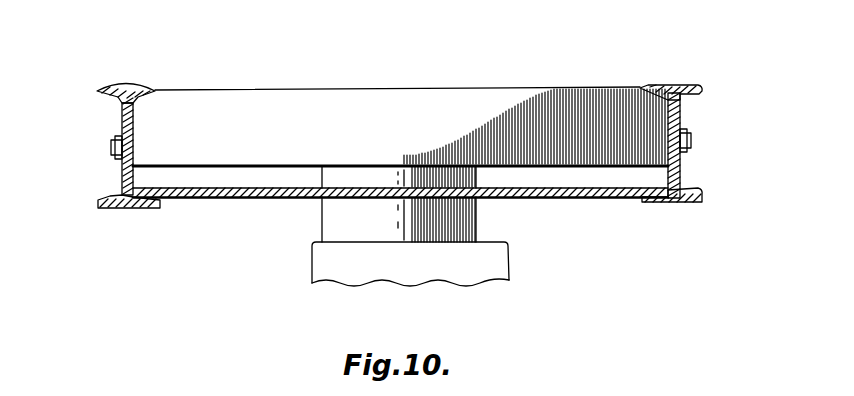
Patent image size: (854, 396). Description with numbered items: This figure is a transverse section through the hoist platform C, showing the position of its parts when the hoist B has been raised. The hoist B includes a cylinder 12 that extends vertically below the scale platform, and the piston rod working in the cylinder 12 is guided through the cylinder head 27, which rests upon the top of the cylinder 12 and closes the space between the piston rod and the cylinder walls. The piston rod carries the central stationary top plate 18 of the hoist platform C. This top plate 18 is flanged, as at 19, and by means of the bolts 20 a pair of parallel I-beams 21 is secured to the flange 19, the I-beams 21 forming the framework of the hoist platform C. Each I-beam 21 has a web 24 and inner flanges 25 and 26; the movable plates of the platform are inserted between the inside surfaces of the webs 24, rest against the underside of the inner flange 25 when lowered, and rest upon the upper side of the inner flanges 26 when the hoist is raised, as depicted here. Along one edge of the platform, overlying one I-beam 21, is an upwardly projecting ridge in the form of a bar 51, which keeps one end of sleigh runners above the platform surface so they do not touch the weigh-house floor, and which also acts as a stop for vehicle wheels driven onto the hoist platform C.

The bar 51 is at (128, 82).
The inner flange 25 is at (103, 96).
The I-beams 21 is at (122, 104).
The bolts 20 is at (111, 148).
The webs 24 is at (135, 164).
The inner flanges 26 is at (112, 197).
The flange 19 is at (250, 155).
The hoist B is at (338, 220).
The cylinder 12 is at (478, 220).
The cylinder head 27 is at (482, 263).
The hoist platform C is at (322, 87).
The top plate 18 is at (492, 87).